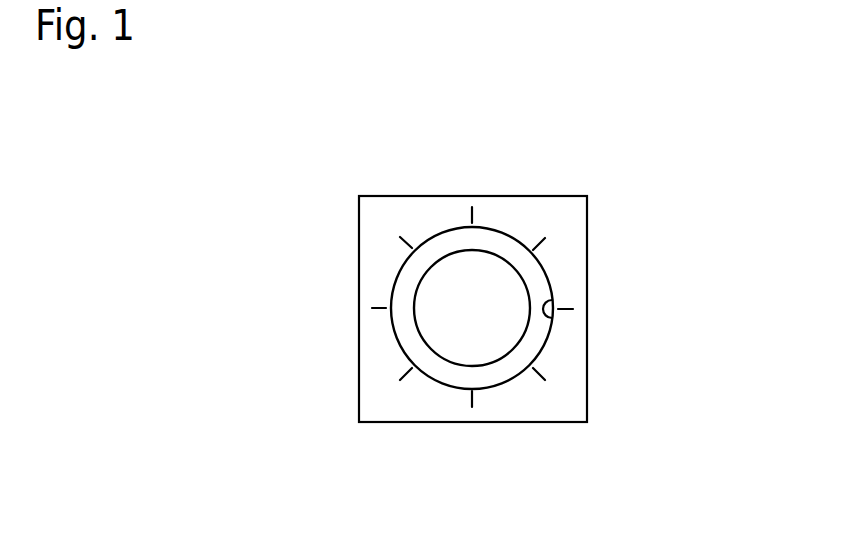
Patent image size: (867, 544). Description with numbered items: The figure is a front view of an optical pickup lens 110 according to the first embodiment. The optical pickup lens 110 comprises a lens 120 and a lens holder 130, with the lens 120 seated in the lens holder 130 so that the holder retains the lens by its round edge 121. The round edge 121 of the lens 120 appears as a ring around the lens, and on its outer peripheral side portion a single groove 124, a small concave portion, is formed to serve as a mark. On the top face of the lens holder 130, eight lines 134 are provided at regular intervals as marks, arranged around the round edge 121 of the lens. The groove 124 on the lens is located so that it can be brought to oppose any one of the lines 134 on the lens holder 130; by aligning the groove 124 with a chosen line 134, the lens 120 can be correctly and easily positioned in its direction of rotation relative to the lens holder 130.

The optical pickup lens 110 is at (570, 297).
The lens 120 is at (478, 278).
The round edge 121 is at (533, 273).
The groove 124 is at (553, 305).
The lens holder 130 is at (565, 404).
The lines 134 is at (526, 307).